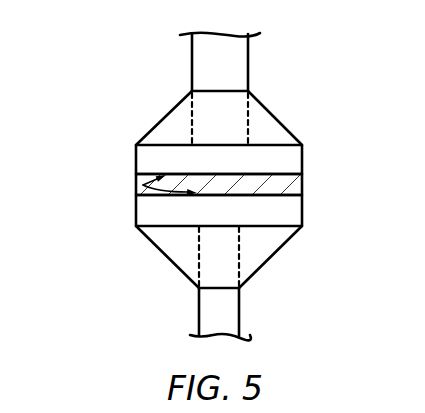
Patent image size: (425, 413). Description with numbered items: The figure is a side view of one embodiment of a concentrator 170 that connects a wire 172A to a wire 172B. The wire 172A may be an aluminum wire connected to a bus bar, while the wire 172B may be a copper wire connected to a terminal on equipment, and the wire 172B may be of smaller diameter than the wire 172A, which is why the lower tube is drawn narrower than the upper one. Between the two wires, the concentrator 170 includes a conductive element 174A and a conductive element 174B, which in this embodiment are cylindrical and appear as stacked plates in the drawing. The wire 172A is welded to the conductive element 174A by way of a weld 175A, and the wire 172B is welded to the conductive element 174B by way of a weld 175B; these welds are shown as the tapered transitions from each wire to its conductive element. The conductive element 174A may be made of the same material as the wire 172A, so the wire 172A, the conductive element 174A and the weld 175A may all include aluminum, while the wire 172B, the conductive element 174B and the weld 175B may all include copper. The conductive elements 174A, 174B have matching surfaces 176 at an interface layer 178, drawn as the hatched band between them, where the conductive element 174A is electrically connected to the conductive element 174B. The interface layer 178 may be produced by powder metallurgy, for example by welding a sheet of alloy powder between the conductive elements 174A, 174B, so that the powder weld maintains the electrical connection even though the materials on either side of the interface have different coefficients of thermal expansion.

The concentrator 170 is at (97, 138).
The wire 172A is at (203, 61).
The wire 172B is at (207, 313).
The conductive element 174A is at (295, 151).
The conductive element 174B is at (293, 215).
The weld 175A is at (263, 125).
The weld 175B is at (263, 252).
The matching surfaces 176 is at (143, 185).
The interface layer 178 is at (293, 182).